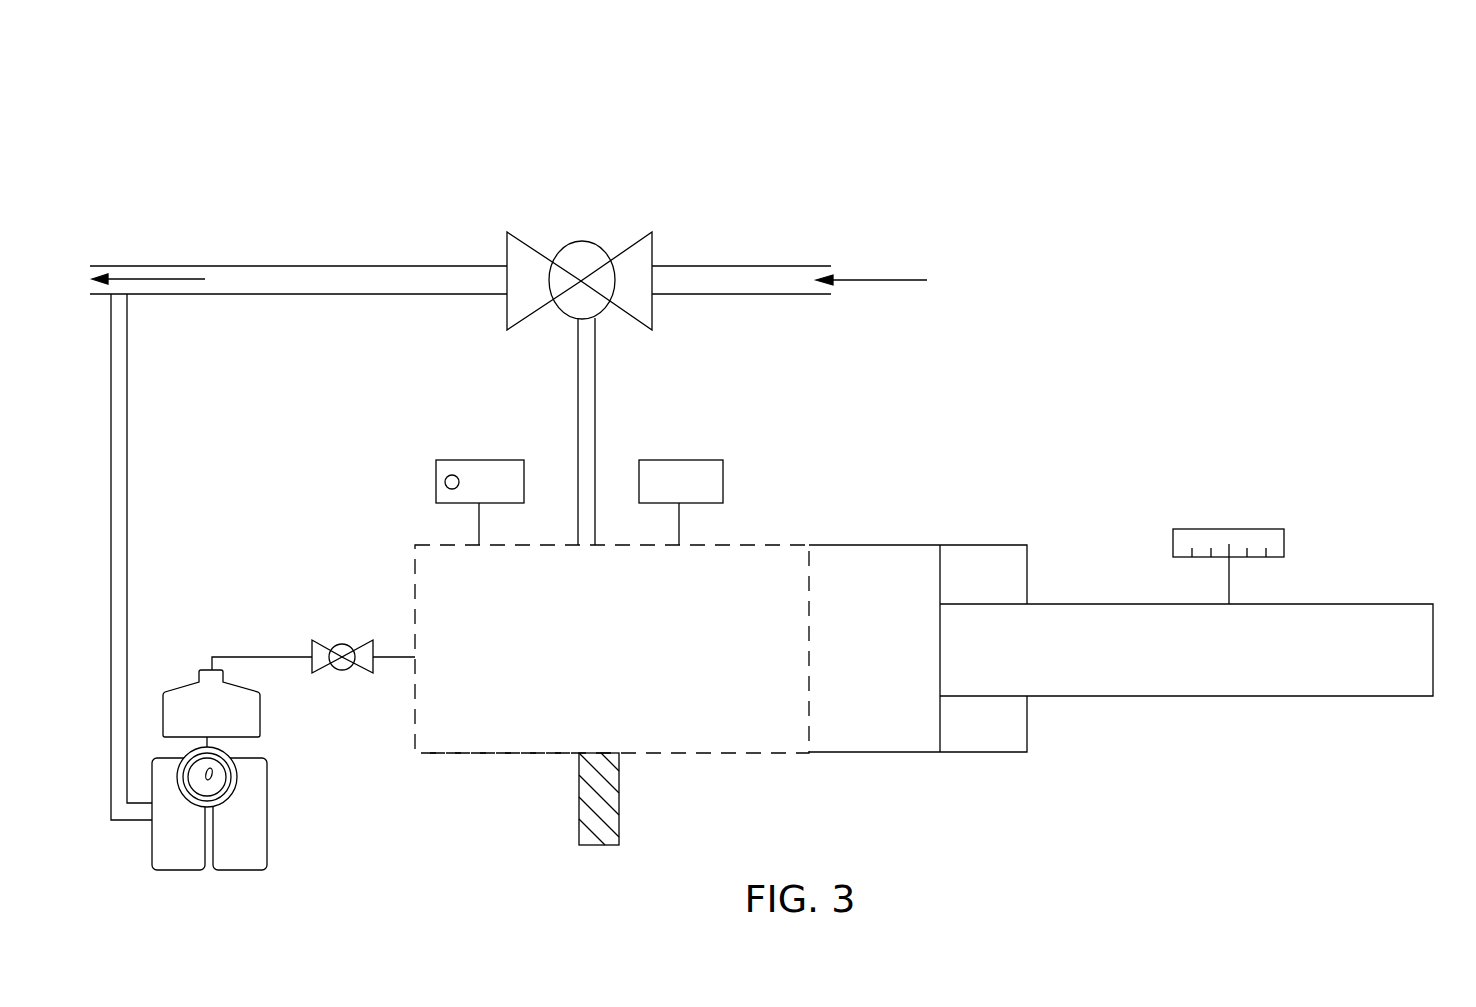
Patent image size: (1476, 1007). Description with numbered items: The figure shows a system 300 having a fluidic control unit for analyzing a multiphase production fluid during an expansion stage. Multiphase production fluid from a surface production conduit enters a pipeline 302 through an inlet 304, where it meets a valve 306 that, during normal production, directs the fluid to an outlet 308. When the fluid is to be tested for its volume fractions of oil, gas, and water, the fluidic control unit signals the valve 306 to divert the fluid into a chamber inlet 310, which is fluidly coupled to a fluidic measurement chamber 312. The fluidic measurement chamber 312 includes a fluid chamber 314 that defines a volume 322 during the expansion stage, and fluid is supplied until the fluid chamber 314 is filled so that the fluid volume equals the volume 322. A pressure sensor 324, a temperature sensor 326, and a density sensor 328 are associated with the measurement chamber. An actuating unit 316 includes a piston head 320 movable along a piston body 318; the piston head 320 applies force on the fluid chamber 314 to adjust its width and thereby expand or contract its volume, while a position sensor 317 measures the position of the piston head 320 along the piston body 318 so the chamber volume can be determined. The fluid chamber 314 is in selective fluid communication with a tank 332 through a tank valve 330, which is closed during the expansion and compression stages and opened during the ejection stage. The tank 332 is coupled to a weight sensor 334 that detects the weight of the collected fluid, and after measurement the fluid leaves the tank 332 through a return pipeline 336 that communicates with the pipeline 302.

The system 300 is at (440, 128).
The pipeline 302 is at (380, 190).
The inlet 304 is at (724, 266).
The valve 306 is at (582, 240).
The outlet 308 is at (205, 266).
The chamber inlet 310 is at (596, 370).
The fluidic measurement chamber 312 is at (890, 402).
The fluid chamber 314 is at (782, 545).
The actuating unit 316 is at (1408, 547).
The position sensor 317 is at (1227, 529).
The piston body 318 is at (1057, 604).
The piston head 320 is at (873, 545).
The volume 322 is at (514, 753).
The pressure sensor 324 is at (472, 460).
The temperature sensor 326 is at (674, 460).
The density sensor 328 is at (619, 807).
The tank valve 330 is at (342, 643).
The tank 332 is at (262, 719).
The weight sensor 334 is at (268, 829).
The return pipeline 336 is at (128, 526).